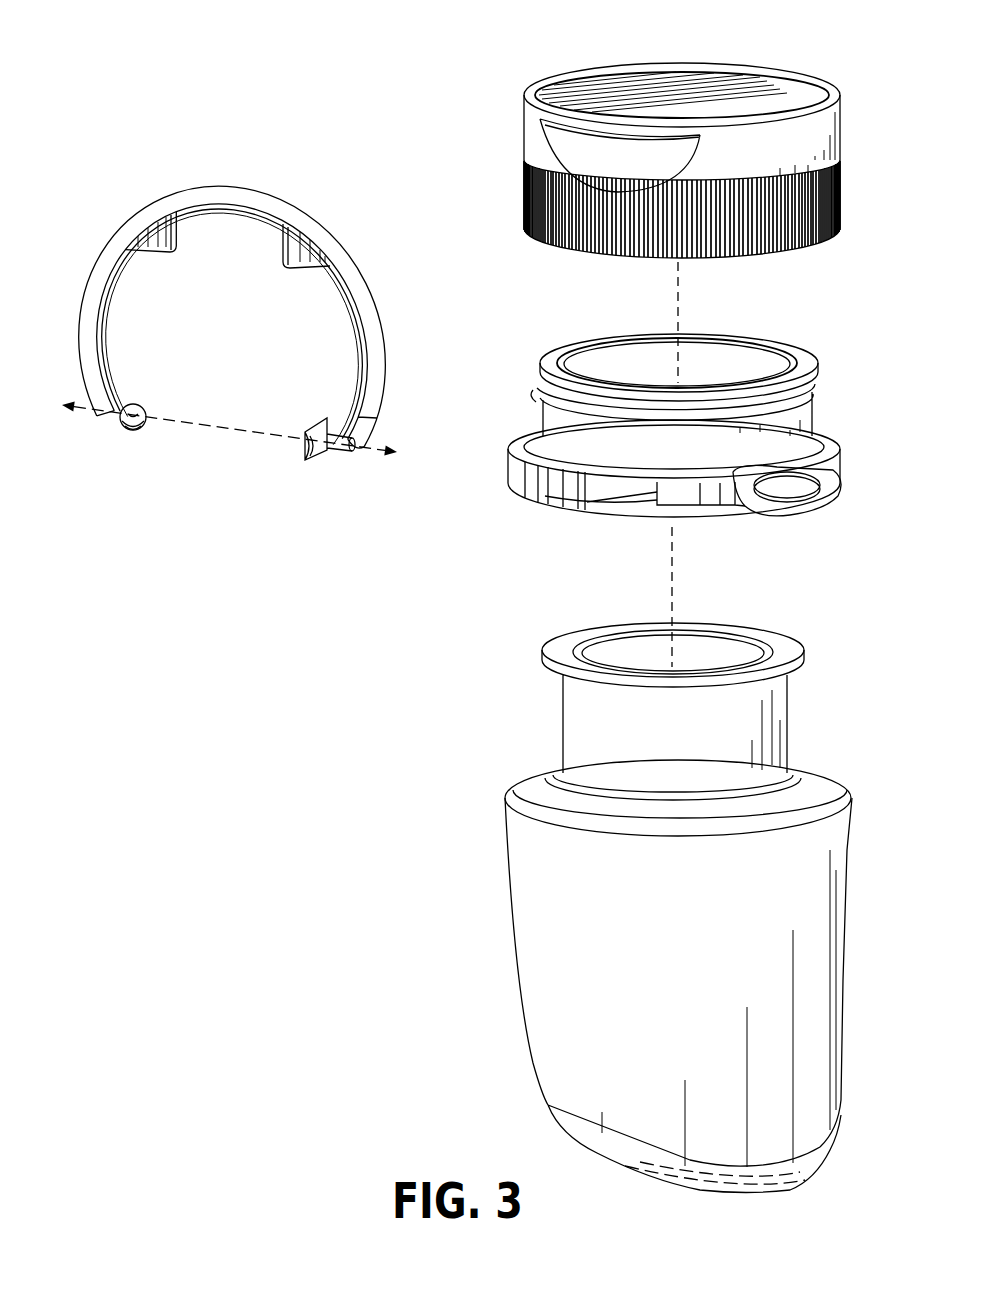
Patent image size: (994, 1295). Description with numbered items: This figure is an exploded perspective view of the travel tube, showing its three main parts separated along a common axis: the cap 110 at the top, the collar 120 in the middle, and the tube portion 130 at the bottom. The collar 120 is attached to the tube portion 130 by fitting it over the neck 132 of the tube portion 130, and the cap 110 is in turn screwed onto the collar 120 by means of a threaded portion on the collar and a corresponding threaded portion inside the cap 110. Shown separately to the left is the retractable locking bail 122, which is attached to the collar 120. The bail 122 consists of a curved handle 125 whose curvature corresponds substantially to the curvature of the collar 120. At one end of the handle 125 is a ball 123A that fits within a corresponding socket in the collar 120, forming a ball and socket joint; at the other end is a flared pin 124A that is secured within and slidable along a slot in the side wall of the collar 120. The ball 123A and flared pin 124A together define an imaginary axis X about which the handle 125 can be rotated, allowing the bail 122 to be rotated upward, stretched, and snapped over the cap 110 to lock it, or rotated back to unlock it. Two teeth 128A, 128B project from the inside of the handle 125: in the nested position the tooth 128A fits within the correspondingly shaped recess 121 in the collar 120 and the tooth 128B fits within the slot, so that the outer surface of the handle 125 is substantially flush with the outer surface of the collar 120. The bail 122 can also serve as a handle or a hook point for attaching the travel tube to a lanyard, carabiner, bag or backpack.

The cap 110 is at (530, 58).
The collar 120 is at (704, 436).
The recess 121 is at (700, 490).
The retractable locking bail 122 is at (233, 317).
The ball 123A is at (140, 408).
The flared pin 124A is at (313, 438).
The handle 125 is at (340, 268).
The tooth 128A is at (138, 238).
The tooth 128B is at (285, 272).
The tube portion 130 is at (628, 908).
The neck 132 is at (758, 712).